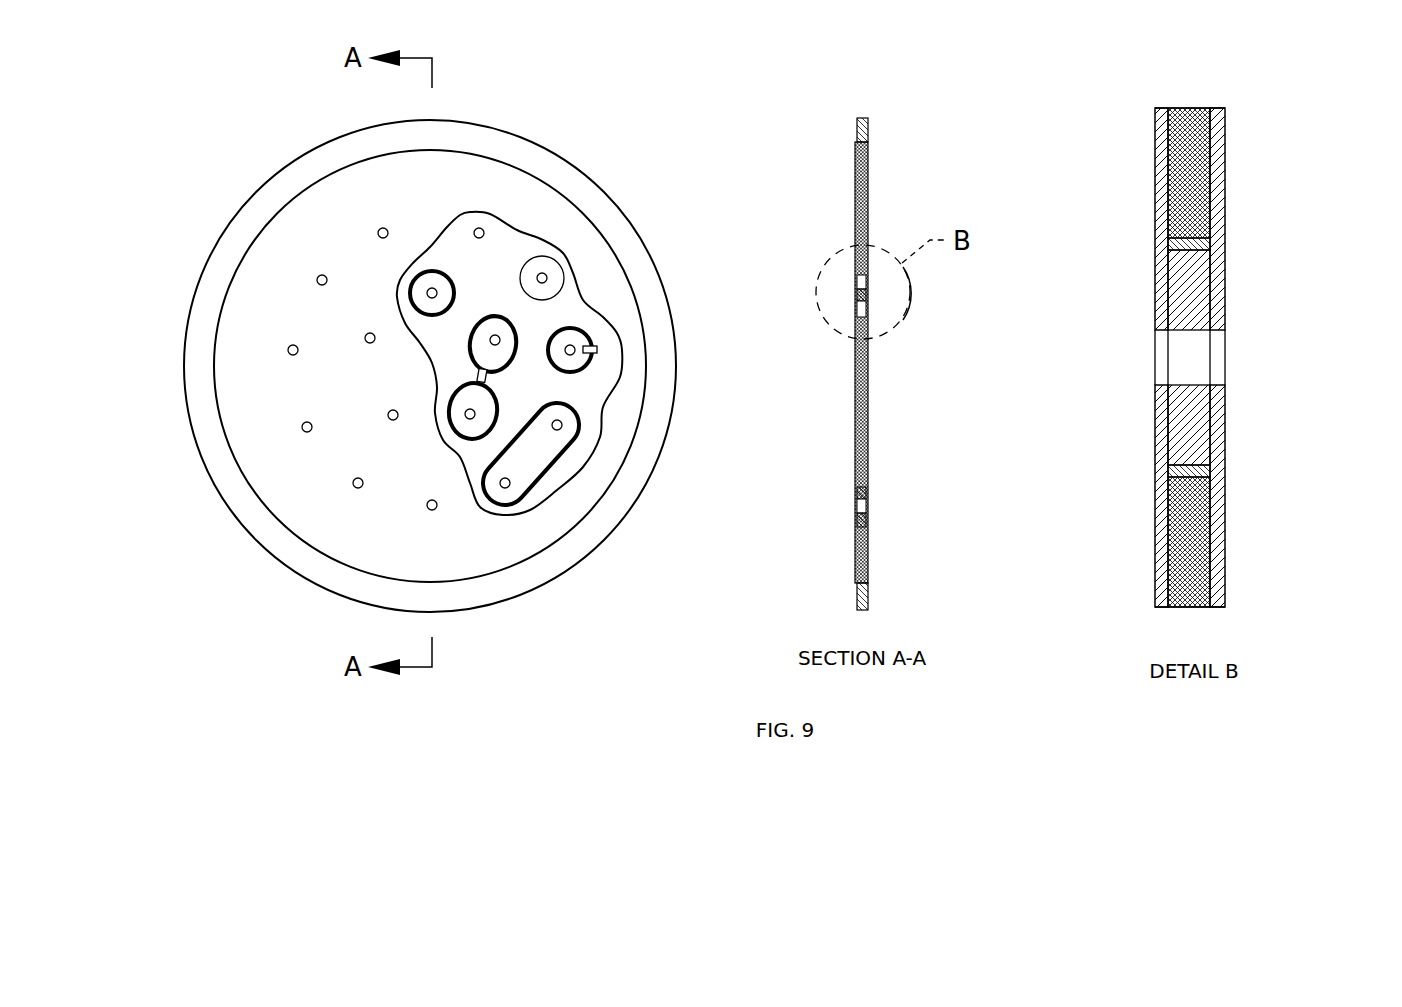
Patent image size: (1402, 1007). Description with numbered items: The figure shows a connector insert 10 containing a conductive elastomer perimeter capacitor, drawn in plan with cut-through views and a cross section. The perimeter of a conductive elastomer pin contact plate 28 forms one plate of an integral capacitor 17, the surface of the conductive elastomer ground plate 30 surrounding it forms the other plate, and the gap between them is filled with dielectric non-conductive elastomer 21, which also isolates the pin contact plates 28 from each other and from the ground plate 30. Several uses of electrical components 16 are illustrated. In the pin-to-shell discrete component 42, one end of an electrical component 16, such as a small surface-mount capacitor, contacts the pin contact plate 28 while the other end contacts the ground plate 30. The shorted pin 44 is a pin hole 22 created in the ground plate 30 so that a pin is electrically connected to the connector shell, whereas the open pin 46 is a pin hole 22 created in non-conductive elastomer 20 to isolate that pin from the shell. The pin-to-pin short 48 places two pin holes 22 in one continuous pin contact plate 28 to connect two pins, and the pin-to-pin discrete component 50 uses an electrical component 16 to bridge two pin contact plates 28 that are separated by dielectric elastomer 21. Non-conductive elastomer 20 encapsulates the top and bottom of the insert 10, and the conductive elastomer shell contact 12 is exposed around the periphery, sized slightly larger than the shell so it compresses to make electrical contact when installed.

The connector insert 10 is at (518, 132).
The conductive elastomer shell contact 12 is at (522, 580).
The electrical component 16 is at (472, 371).
The integral capacitor 17 is at (407, 288).
The non-conductive elastomer 20 is at (568, 263).
The dielectric non-conductive elastomer 21 is at (435, 280).
The pin hole 22 is at (287, 354).
The conductive elastomer pin contact plate 28 is at (410, 278).
The conductive elastomer ground plate 30 is at (455, 247).
The pin-to-shell discrete component 42 is at (572, 363).
The shorted pin 44 is at (485, 226).
The open pin 46 is at (560, 256).
The pin-to-pin short 48 is at (527, 468).
The pin-to-pin discrete component 50 is at (460, 380).